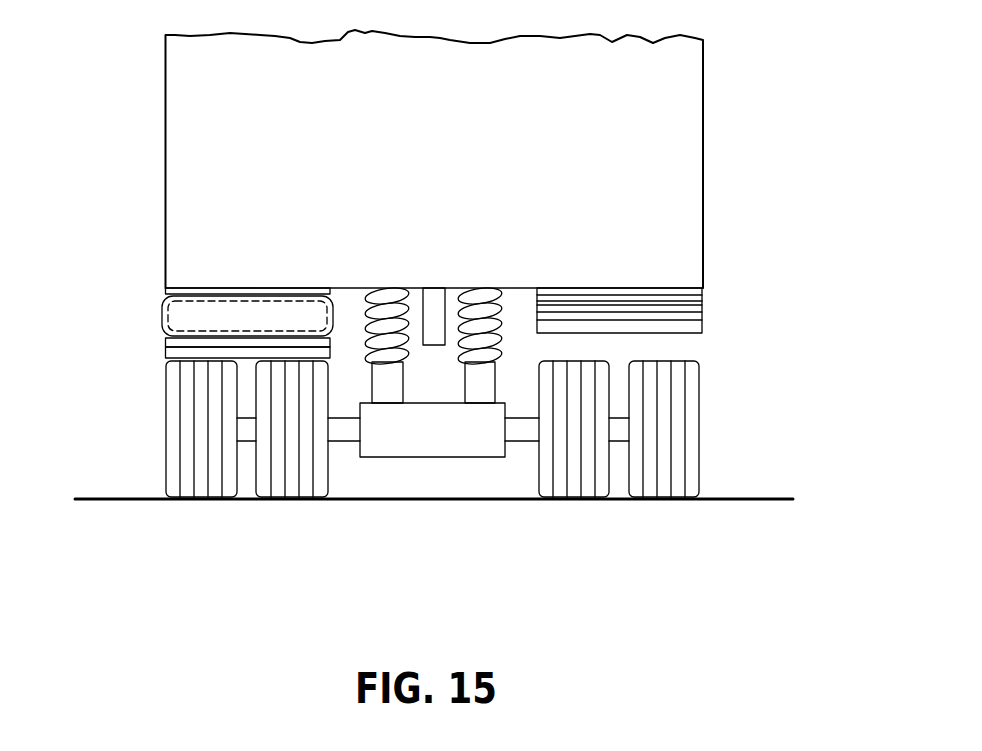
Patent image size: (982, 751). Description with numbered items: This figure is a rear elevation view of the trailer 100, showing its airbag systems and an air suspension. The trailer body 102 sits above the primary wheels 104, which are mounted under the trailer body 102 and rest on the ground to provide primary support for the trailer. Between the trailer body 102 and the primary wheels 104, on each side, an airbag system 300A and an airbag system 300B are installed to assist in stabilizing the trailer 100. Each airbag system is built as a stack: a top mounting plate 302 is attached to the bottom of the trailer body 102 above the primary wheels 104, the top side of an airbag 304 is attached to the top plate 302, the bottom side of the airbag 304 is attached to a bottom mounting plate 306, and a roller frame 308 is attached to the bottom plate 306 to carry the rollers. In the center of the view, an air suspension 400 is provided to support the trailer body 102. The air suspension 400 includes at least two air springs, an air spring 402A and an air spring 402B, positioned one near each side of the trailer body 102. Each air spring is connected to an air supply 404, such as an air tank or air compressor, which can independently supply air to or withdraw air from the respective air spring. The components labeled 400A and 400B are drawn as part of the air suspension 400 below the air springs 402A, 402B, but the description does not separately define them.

The trailer 100 is at (768, 79).
The trailer body 102 is at (703, 215).
The primary wheels 104 is at (165, 459).
The airbag system 300A is at (143, 299).
The airbag system 300B is at (726, 304).
The top mounting plate 302 is at (165, 291).
The airbag 304 is at (162, 316).
The bottom mounting plate 306 is at (165, 343).
The roller frame 308 is at (165, 352).
The air suspension 400 is at (460, 478).
The first shock absorber 400A is at (382, 387).
The second shock absorber 400B is at (483, 387).
The air spring 402A is at (372, 303).
The air spring 402B is at (492, 303).
The air supply 404 is at (408, 448).